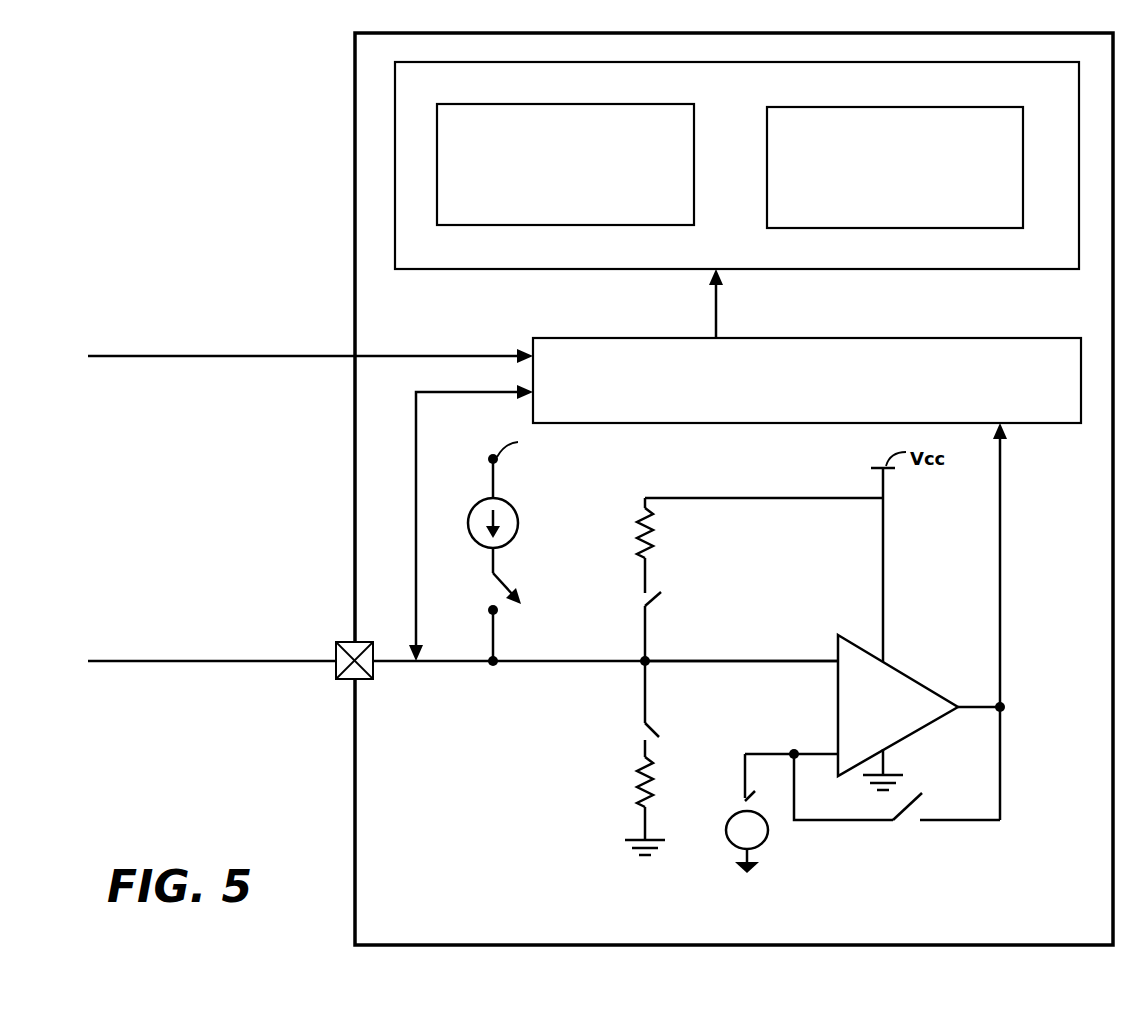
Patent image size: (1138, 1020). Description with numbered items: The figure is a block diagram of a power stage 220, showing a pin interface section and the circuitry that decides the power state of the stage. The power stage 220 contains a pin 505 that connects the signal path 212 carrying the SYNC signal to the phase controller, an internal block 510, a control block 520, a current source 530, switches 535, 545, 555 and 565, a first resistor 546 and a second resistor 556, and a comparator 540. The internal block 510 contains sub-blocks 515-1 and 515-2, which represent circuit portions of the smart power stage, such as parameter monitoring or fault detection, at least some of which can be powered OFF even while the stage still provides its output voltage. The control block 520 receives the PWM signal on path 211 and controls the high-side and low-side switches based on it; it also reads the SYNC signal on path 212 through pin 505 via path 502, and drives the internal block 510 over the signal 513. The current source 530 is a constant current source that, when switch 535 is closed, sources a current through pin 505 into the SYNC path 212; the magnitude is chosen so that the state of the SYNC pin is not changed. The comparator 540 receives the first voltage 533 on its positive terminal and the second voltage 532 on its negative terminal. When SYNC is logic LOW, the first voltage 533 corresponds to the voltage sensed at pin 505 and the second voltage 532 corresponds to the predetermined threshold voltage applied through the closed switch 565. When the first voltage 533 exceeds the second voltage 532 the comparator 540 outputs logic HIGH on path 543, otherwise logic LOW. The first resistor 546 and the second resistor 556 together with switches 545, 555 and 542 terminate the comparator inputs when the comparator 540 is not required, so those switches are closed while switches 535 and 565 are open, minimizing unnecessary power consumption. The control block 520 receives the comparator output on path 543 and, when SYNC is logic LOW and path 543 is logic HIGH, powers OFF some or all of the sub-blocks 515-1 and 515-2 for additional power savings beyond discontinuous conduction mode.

The power stage 220 is at (305, 84).
The internal block 510 is at (737, 165).
The sub-block 515-1 is at (565, 164).
The sub-block 515-2 is at (895, 167).
The control block 520 is at (807, 380).
The control signal 513 is at (717, 318).
The path carrying signal PWM 211 is at (193, 357).
The signal path SYNC 212 is at (222, 700).
The path 502 is at (471, 523).
The pin 505 is at (362, 681).
The current source 530 is at (533, 496).
The switch 535 is at (510, 580).
The resistor R3 546 is at (636, 536).
The switch 545 is at (643, 598).
The switch 555 is at (640, 726).
The resistor R4 556 is at (636, 776).
The voltage V1 533 is at (786, 636).
The voltage V2 532 is at (814, 716).
The switch 565 is at (742, 797).
The comparator 540 is at (898, 712).
The path 543 is at (1000, 632).
The switch 542 is at (908, 822).